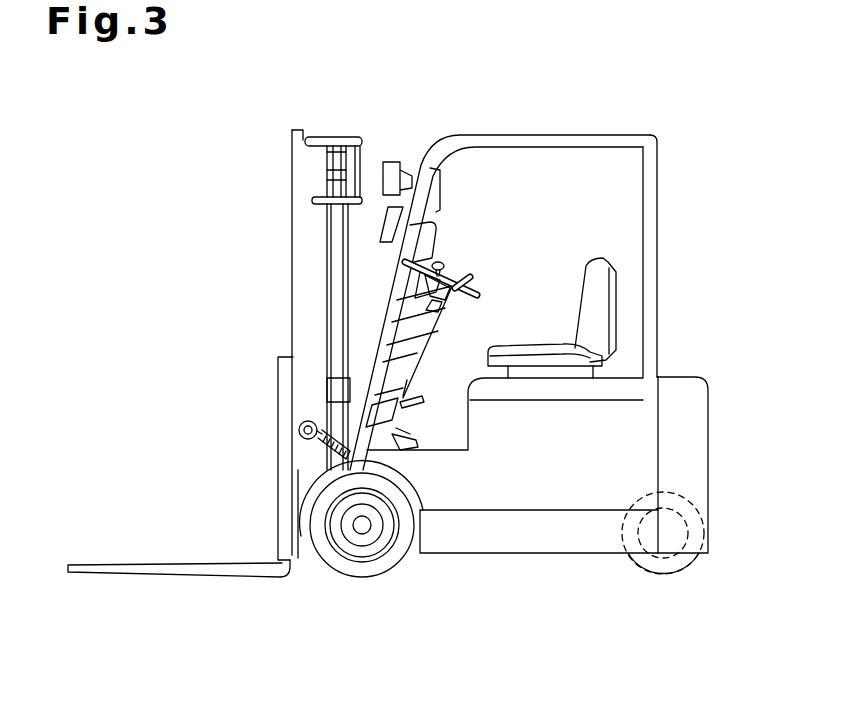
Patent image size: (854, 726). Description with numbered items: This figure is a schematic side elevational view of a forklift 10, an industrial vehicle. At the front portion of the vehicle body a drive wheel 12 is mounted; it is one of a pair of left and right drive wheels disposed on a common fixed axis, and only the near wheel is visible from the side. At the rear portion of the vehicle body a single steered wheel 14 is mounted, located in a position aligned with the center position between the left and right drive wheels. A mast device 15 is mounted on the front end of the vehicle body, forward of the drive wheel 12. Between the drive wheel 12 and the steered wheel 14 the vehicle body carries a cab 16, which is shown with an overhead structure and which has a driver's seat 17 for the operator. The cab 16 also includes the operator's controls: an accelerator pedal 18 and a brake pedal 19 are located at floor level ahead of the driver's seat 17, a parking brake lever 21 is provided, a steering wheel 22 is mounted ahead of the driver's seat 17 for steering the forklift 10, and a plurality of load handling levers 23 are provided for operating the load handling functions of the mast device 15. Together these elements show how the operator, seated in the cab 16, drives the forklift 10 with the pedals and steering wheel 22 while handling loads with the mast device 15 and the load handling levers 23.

The forklift 10 is at (706, 108).
The drive wheel 12 is at (396, 565).
The steered wheel 14 is at (628, 565).
The mast device 15 is at (262, 357).
The cab 16 is at (553, 230).
The driver's seat 17 is at (535, 348).
The accelerator pedal 18 is at (420, 438).
The brake pedal 19 is at (422, 395).
The parking brake lever 21 is at (440, 340).
The steering wheel 22 is at (478, 286).
The load handling lever 23 is at (452, 272).